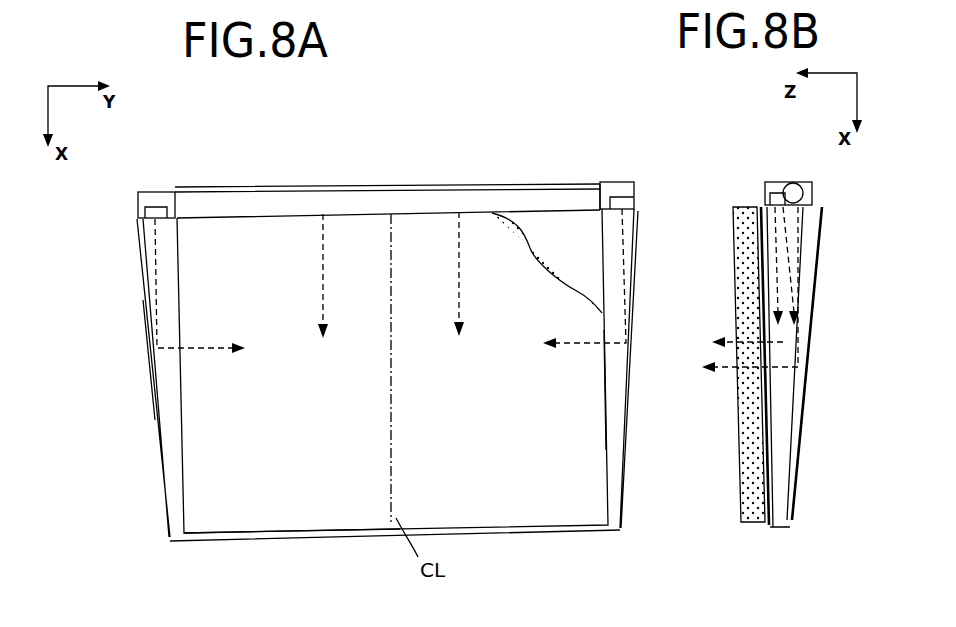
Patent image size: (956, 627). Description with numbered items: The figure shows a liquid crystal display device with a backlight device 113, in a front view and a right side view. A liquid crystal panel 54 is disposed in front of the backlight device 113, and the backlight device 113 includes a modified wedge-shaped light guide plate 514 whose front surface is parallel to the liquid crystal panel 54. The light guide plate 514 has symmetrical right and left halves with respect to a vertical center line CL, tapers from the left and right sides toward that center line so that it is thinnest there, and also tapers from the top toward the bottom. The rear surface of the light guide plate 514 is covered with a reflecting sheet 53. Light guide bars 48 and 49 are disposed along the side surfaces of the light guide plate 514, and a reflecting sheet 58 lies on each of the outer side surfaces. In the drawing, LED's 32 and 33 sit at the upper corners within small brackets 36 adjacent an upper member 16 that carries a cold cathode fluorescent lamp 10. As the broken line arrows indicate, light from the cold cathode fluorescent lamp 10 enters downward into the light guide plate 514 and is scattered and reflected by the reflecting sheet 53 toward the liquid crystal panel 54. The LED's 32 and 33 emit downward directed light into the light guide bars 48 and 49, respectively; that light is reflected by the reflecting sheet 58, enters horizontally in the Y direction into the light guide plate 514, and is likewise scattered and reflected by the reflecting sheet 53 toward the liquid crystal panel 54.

In FIG. 8A, the cold cathode fluorescent lamp 10 is at (460, 196).
In FIG. 8B, the cold cathode fluorescent lamp 10 is at (782, 190).
In FIG. 8A, the upper rail 16 is at (553, 185).
In FIG. 8A, the LED 32 is at (620, 205).
In FIG. 8B, the LED 32 is at (770, 200).
In FIG. 8A, the LED 33 is at (145, 214).
In FIG. 8A, the corner bracket 36 is at (157, 192).
In FIG. 8B, the corner bracket 36 is at (772, 182).
In FIG. 8A, the light guide bar 48 is at (606, 426).
In FIG. 8B, the light guide bar 48 is at (778, 529).
In FIG. 8A, the light guide bar 49 is at (166, 372).
In FIG. 8B, the reflecting sheet 53 is at (795, 490).
In FIG. 8A, the liquid crystal panel 54 is at (588, 280).
In FIG. 8B, the liquid crystal panel 54 is at (750, 494).
In FIG. 8A, the reflecting sheet 58 is at (165, 493).
In FIG. 8B, the reflecting sheet 58 is at (770, 527).
In FIG. 8A, the backlight device 113 is at (146, 440).
In FIG. 8A, the light guide plate 514 is at (233, 533).